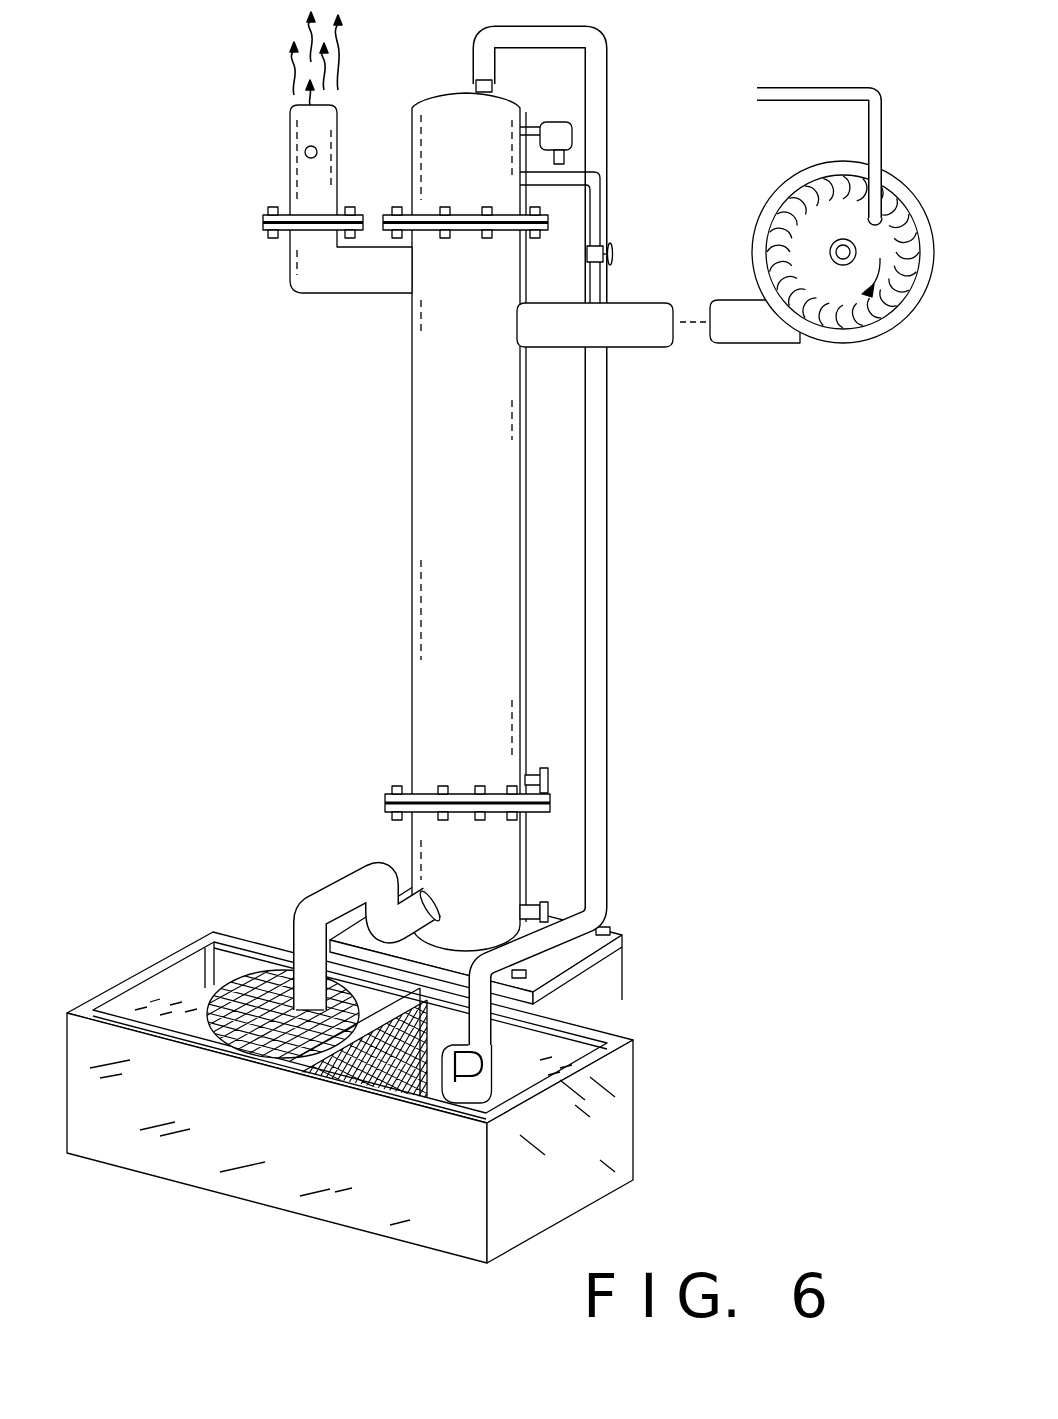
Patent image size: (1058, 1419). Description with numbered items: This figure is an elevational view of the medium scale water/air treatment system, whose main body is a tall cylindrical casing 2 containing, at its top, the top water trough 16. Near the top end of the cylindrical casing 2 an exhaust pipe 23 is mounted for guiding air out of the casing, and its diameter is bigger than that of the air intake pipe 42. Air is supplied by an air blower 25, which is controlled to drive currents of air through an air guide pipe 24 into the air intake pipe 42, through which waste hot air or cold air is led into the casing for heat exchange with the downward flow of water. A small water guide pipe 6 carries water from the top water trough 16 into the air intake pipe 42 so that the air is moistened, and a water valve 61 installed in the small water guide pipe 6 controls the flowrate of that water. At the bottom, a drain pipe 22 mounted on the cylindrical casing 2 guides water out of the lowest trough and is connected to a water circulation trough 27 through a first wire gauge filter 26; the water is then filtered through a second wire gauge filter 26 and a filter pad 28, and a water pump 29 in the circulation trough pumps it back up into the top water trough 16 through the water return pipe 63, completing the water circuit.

The cylindrical casing 2 is at (378, 484).
The small water guide pipe 6 is at (600, 193).
The top water trough 16 is at (423, 100).
The drain pipe 22 is at (328, 907).
The exhaust pipe 23 is at (300, 135).
The air guide pipe 24 is at (768, 328).
The air blower 25 is at (895, 320).
The wire gauge filter 26 is at (257, 976).
The water circulation trough 27 is at (638, 1102).
The filter pad 28 is at (322, 1062).
The water pump 29 is at (490, 1063).
The air intake pipe 42 is at (662, 300).
The water valve 61 is at (618, 245).
The water return pipe 63 is at (608, 815).